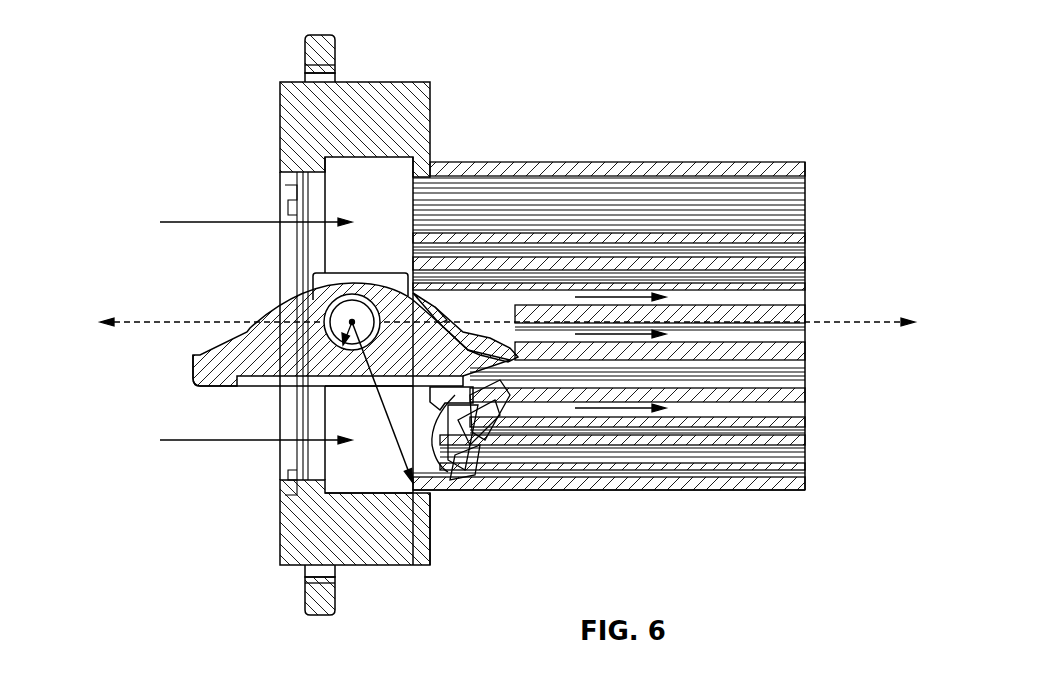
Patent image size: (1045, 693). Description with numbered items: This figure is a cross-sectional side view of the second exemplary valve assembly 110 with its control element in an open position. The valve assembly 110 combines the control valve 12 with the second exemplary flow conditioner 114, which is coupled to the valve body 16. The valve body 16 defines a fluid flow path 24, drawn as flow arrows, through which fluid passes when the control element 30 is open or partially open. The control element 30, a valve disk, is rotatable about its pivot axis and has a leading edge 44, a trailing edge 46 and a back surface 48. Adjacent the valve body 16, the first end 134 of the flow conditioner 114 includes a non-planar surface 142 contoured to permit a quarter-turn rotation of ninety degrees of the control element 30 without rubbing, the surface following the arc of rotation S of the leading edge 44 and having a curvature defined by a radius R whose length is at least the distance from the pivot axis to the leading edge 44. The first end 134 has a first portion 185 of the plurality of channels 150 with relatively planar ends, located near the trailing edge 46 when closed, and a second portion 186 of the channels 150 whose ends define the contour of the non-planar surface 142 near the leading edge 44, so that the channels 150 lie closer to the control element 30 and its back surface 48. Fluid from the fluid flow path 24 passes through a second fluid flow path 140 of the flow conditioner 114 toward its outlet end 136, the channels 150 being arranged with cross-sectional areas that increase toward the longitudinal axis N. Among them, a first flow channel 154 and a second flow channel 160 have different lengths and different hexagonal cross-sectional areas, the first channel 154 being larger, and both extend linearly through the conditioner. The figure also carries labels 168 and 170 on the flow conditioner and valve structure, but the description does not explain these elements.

The second exemplary valve assembly 110 is at (140, 98).
The control valve 12 is at (246, 163).
The valve body 16 is at (342, 118).
The first end 134 is at (410, 195).
The first portion of the plurality of channels 185 is at (413, 215).
The fluid flow path 24 is at (198, 235).
The control element 30 is at (270, 340).
The back surface 48 is at (260, 326).
The trailing edge 46 is at (193, 372).
The second exemplary flow conditioner 114 is at (775, 162).
The plurality of channels 150 is at (545, 200).
The second fluid flow path 140 is at (612, 290).
The outlet end 136 is at (810, 262).
The first flow channel 154 is at (787, 300).
The second flow channel 160 is at (800, 382).
The bottom plate 170 is at (808, 480).
The non-planar surface 142 is at (487, 423).
The leading edge 44 is at (505, 362).
The second portion of the plurality of channels 186 is at (453, 455).
The arc of rotation S is at (476, 470).
The flange 168 is at (410, 533).
The radius R is at (377, 402).
The longitudinal axis N is at (145, 325).